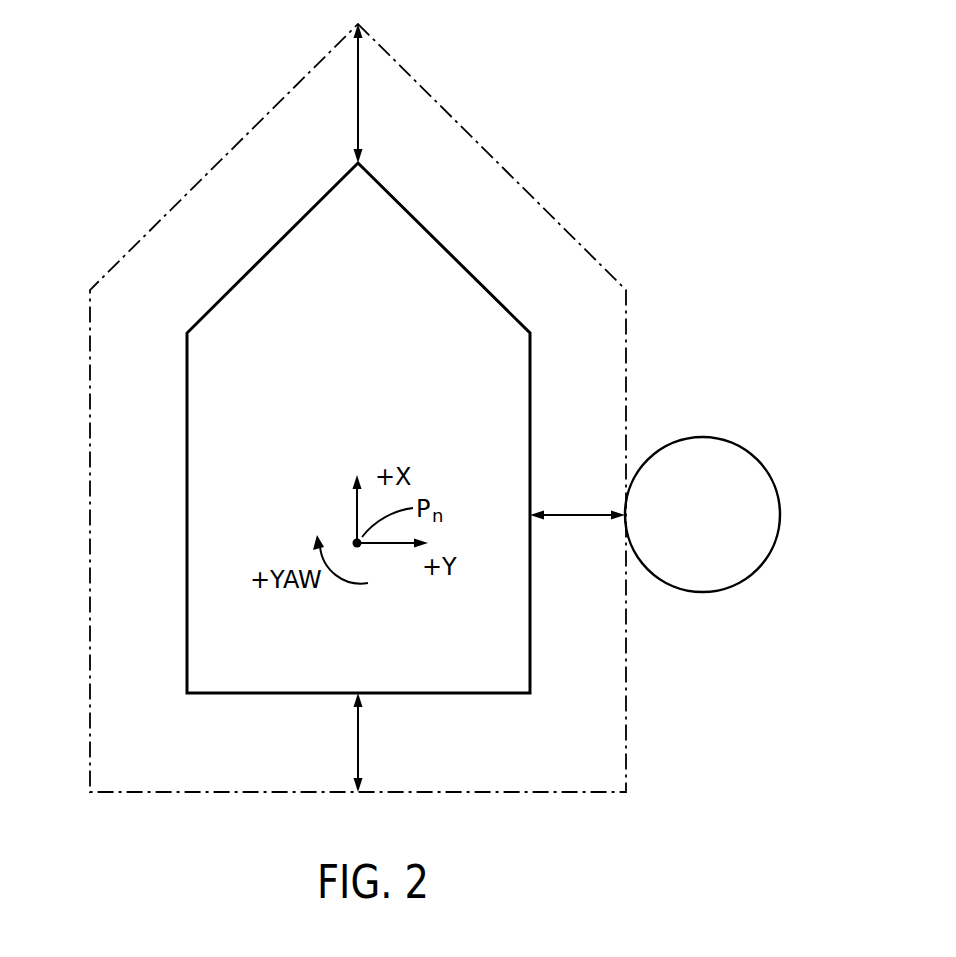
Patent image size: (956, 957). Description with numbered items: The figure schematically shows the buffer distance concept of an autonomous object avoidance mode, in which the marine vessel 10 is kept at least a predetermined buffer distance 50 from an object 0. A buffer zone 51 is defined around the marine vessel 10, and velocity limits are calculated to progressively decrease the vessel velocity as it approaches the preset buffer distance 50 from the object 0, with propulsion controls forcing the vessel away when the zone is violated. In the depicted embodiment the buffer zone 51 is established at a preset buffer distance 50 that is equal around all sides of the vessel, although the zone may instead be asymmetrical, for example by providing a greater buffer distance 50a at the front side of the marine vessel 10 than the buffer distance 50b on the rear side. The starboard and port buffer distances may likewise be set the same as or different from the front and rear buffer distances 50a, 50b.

The buffer zone 51 is at (490, 157).
The marine vessel 10 is at (445, 245).
The front buffer distance 50a is at (358, 93).
The rear buffer distance 50b is at (358, 755).
The buffer distance 50 is at (597, 512).
The object 0 is at (702, 437).